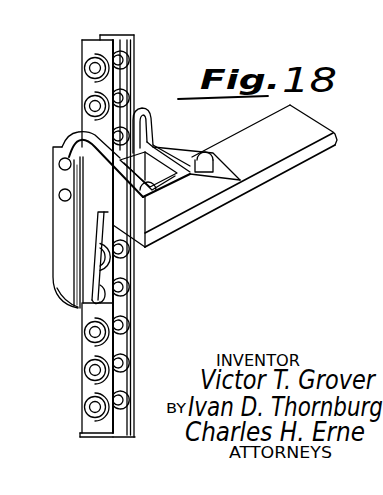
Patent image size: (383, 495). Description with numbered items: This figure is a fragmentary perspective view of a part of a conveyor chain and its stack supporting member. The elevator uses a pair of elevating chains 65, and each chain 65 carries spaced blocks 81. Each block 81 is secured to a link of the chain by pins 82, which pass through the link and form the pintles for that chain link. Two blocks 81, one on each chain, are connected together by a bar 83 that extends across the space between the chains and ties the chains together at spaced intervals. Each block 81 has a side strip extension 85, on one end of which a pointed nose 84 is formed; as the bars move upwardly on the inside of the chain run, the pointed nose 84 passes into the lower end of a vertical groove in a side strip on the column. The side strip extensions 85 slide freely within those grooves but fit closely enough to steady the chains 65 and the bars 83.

The elevating chain 65 is at (107, 82).
The block 81 is at (151, 206).
The pin 82 is at (59, 166).
The bar 83 is at (271, 160).
The pointed nose 84 is at (68, 290).
The side strip extension 85 is at (62, 247).